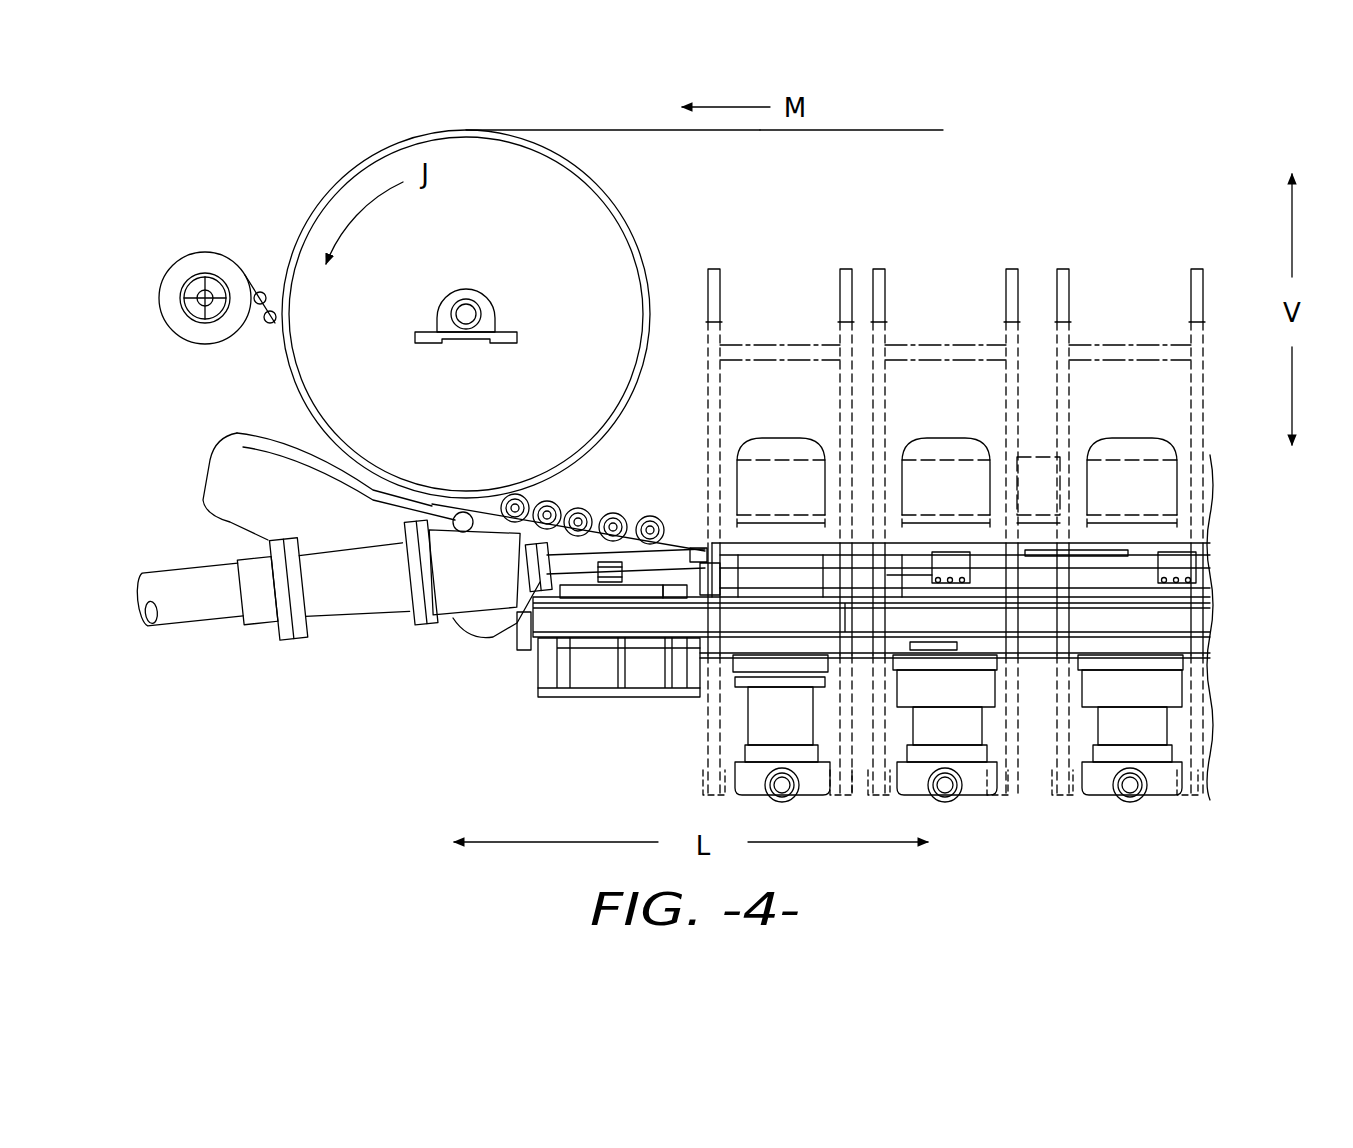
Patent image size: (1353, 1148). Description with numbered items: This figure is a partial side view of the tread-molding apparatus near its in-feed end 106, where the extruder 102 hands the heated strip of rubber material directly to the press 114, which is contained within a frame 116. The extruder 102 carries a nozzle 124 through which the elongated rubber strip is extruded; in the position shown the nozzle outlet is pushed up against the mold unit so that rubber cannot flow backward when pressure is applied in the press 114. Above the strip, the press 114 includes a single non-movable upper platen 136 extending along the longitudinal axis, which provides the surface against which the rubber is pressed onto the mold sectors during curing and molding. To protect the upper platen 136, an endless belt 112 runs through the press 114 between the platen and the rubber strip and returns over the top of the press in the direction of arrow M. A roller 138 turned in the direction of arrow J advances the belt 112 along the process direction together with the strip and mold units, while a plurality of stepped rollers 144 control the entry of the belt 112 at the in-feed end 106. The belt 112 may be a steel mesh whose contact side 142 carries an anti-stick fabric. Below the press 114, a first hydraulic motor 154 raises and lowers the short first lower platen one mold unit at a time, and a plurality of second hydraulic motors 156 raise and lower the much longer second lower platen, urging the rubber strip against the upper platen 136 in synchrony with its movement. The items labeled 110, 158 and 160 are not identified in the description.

The extruder 102 is at (203, 580).
The in-feed end 106 is at (665, 420).
The base beam 110 is at (1190, 605).
The endless belt 112 is at (880, 128).
The press 114 is at (941, 262).
The frame 116 is at (1063, 267).
The nozzle 124 is at (683, 555).
The upper platen 136 is at (1163, 492).
The roller 138 is at (612, 222).
The contact side 142 is at (554, 124).
The stepped rollers 144 is at (556, 500).
The first hydraulic motor 154 is at (770, 718).
The second hydraulic motors 156 is at (1155, 690).
The guide arm 158 is at (245, 482).
The housing 160 is at (595, 675).